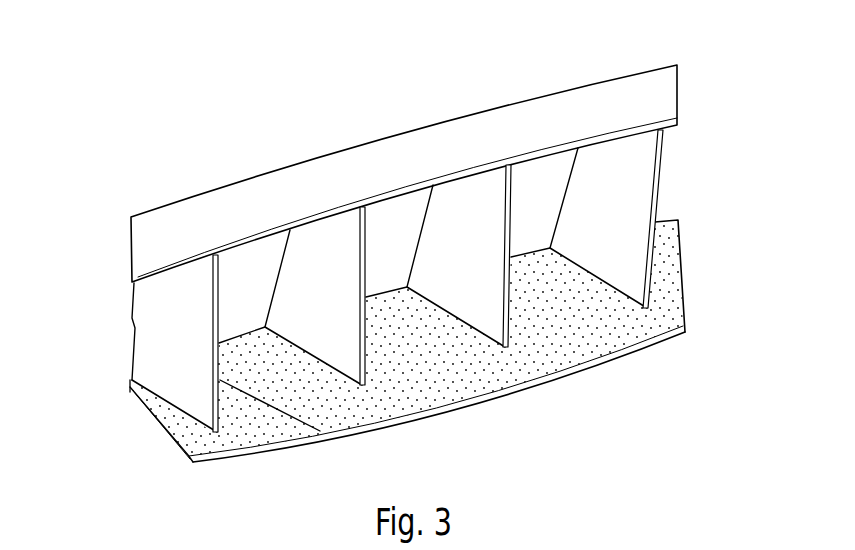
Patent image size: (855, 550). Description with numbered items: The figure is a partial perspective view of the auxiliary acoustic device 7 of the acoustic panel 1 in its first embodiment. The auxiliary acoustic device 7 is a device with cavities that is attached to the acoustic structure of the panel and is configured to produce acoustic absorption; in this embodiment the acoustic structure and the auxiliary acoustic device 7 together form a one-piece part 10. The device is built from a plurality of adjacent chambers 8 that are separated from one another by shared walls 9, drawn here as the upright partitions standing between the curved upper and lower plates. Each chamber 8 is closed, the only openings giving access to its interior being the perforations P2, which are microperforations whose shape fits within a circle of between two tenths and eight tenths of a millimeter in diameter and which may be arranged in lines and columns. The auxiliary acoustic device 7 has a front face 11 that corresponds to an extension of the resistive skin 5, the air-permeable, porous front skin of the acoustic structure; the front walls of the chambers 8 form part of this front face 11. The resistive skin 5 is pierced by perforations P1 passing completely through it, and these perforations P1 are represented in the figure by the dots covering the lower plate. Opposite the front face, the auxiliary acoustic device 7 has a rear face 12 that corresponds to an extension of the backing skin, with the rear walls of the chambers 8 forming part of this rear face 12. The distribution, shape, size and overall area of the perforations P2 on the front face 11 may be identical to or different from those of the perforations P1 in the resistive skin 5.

The acoustic panel 1 is at (479, 97).
The resistive skin 5 is at (468, 388).
The auxiliary acoustic device 7 is at (188, 187).
The chambers 8 is at (399, 232).
The shared walls 9 is at (664, 178).
The one-piece part 10 is at (113, 243).
The front face 11 is at (178, 406).
The rear face 12 is at (622, 88).
The perforations P1 is at (601, 340).
The perforations P2 is at (680, 245).